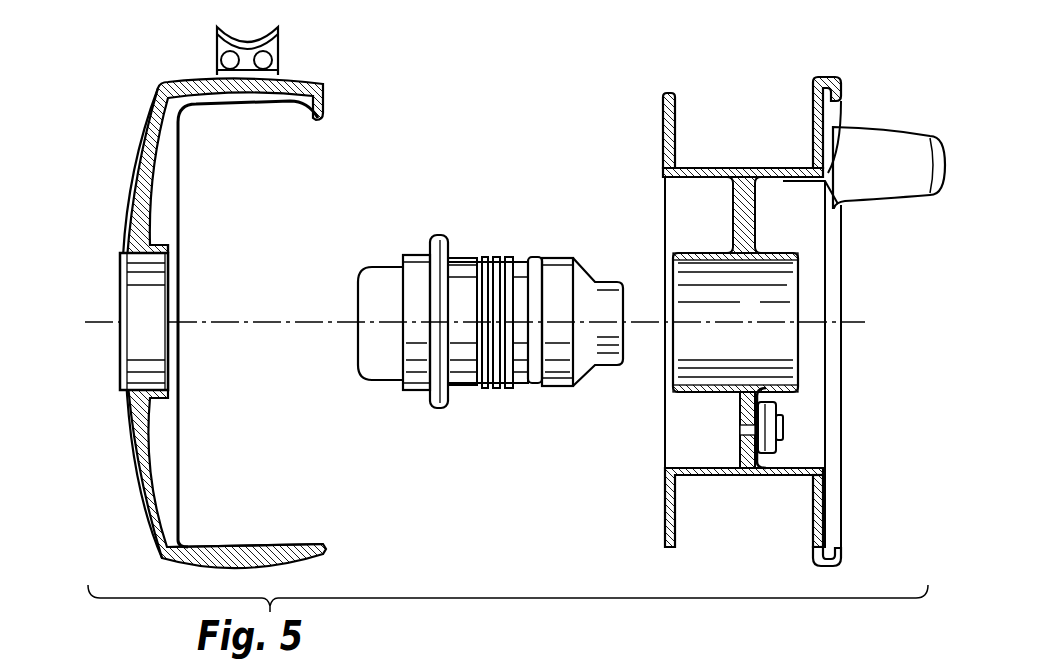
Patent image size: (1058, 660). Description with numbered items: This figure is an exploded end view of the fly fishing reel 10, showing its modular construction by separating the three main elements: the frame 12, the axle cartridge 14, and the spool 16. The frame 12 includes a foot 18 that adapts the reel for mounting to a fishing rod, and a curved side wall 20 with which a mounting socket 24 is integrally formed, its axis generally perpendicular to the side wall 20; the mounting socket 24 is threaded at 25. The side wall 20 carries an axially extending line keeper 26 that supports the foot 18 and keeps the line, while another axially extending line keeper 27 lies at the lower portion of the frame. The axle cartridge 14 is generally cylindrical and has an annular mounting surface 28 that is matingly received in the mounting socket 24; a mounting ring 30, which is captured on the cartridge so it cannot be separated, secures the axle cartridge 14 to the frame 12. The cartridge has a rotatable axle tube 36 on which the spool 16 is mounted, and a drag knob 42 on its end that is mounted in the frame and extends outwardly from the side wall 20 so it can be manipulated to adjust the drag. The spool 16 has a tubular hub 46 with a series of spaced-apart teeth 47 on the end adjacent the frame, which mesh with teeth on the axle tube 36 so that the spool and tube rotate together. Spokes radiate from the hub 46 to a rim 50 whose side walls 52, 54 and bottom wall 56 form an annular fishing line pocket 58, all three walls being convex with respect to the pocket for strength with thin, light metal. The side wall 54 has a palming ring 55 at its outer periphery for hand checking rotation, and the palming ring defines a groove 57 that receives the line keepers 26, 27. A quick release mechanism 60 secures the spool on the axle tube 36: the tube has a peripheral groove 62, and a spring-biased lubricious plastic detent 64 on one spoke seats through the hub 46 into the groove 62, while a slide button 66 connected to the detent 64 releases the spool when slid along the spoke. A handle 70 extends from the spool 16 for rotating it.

The fly fishing reel 10 is at (145, 92).
The frame 12 is at (143, 523).
The axle cartridge 14 is at (465, 319).
The spool 16 is at (658, 527).
The foot 18 is at (268, 43).
The side wall 20 is at (130, 436).
The mounting socket 24 is at (152, 387).
The threads 25 is at (157, 246).
The line keeper 26 is at (268, 103).
The line keeper 27 is at (262, 546).
The annular mounting surface 28 is at (413, 256).
The mounting ring 30 is at (443, 235).
The axle tube 36 is at (503, 388).
The drag knob 42 is at (360, 367).
The tubular hub 46 is at (768, 258).
The teeth 47 is at (678, 252).
The rim 50 is at (714, 285).
The side wall 52 is at (677, 143).
The side wall 54 is at (813, 143).
The palming ring 55 is at (847, 555).
The bottom wall 56 is at (703, 167).
The groove 57 is at (815, 553).
The annular fishing line pocket 58 is at (762, 143).
The quick release mechanism 60 is at (756, 412).
The peripheral groove 62 is at (535, 257).
The detent 64 is at (740, 410).
The slide button 66 is at (782, 432).
The handle 70 is at (877, 138).